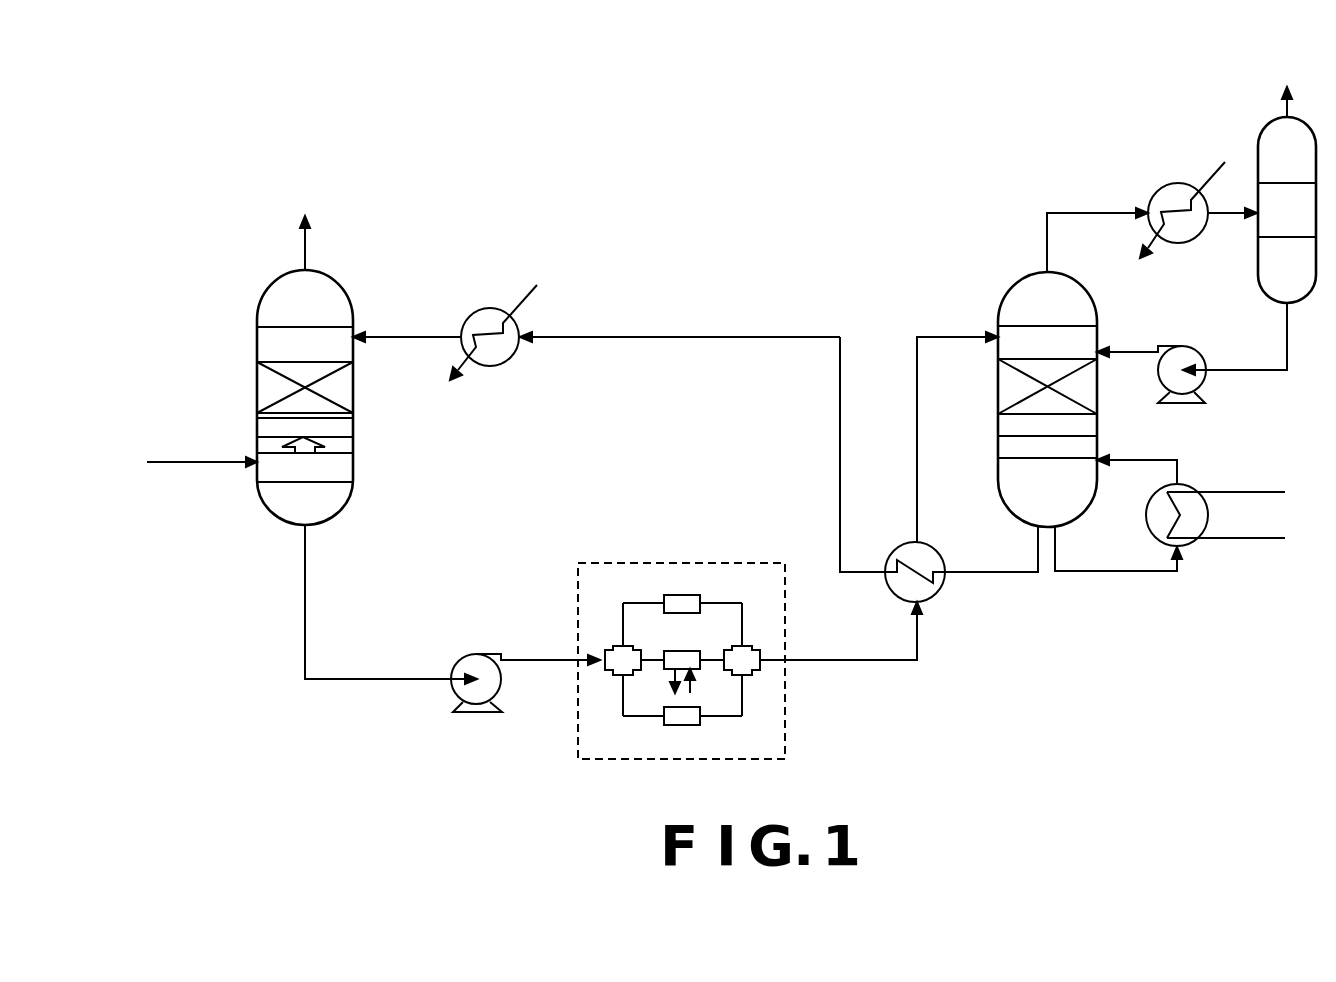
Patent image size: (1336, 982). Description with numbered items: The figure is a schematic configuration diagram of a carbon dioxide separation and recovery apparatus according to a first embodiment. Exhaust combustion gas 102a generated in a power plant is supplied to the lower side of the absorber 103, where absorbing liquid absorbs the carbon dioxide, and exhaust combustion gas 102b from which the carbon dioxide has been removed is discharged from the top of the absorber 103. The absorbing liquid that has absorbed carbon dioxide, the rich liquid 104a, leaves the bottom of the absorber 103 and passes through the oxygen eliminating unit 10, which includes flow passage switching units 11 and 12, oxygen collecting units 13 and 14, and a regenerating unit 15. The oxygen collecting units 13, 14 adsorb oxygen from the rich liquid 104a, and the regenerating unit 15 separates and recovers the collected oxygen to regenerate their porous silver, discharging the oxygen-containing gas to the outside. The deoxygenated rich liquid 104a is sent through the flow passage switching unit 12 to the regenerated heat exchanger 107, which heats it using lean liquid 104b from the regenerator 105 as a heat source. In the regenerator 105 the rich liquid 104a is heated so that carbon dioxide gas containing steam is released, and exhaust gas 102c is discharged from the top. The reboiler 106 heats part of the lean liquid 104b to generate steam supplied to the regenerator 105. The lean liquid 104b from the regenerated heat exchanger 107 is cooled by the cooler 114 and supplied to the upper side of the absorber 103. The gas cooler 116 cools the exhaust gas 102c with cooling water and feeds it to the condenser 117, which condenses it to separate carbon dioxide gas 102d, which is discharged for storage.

The oxygen eliminating unit 10 is at (675, 560).
The flow passage switching unit 11 is at (613, 655).
The flow passage switching unit 12 is at (752, 664).
The oxygen collecting unit 13 is at (688, 600).
The oxygen collecting unit 14 is at (680, 720).
The regenerating unit 15 is at (676, 651).
The exhaust combustion gas 102a is at (212, 441).
The exhaust combustion gas 102b is at (303, 236).
The exhaust gas 102c is at (1034, 240).
The carbon dioxide gas 102d is at (1280, 107).
The absorber 103 is at (257, 296).
The rich liquid 104a is at (315, 556).
The lean liquid 104b is at (1023, 553).
The regenerator 105 is at (1096, 294).
The reboiler 106 is at (1146, 525).
The regenerated heat exchanger 107 is at (938, 592).
The cooler 114 is at (490, 308).
The gas cooler 116 is at (1160, 188).
The condenser 117 is at (1258, 137).